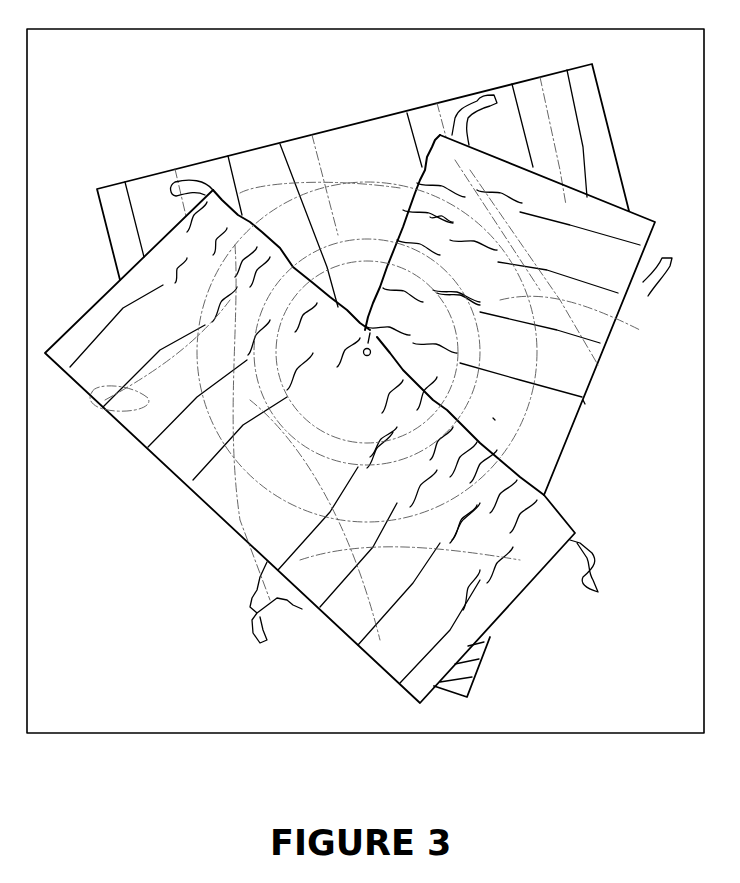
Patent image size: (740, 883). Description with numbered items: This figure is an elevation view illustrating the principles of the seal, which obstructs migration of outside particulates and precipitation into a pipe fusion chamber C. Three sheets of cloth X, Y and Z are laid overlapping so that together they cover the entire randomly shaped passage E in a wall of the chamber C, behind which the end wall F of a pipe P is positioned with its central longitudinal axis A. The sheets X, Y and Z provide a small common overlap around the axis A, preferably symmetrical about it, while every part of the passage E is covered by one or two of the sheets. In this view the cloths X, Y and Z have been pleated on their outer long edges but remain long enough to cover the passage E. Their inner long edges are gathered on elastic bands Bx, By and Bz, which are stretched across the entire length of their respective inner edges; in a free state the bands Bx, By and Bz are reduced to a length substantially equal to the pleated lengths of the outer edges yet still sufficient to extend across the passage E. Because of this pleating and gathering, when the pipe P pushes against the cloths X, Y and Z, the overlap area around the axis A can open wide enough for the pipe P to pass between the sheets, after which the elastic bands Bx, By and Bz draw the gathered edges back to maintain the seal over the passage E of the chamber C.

The sheet of cloth Z is at (272, 145).
The sheet of cloth Y is at (578, 420).
The sheet of cloth X is at (218, 515).
The central longitudinal axis A is at (372, 335).
The elastic band By is at (463, 112).
The elastic band Bz is at (670, 290).
The elastic band Bx is at (580, 592).
The end wall F is at (585, 404).
The passage E is at (493, 418).
The pipe P is at (297, 437).
The pipe fusion chamber C is at (483, 735).